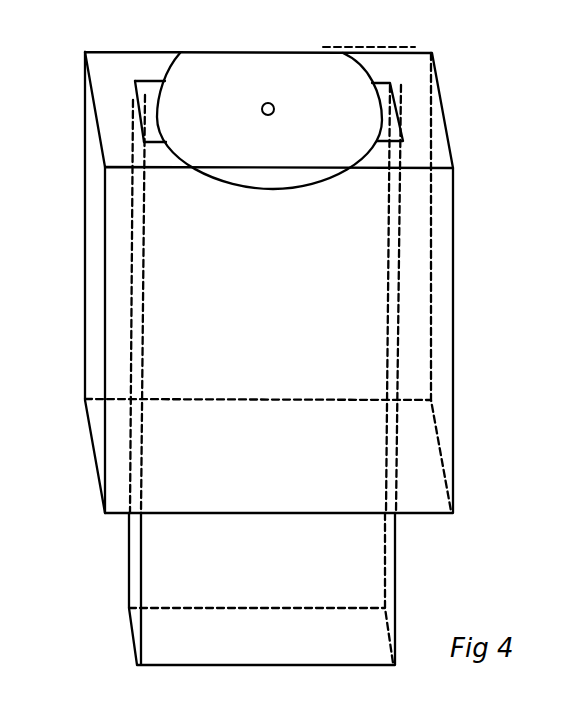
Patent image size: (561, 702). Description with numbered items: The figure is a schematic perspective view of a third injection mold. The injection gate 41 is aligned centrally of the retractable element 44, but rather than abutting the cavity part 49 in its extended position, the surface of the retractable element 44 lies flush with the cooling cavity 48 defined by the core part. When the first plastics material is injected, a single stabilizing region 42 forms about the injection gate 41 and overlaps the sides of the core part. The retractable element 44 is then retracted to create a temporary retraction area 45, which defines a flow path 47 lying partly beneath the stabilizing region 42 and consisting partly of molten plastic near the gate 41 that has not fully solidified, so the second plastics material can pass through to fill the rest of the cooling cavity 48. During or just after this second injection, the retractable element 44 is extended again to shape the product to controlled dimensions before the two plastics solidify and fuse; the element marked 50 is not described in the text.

The injection gate 41 is at (272, 104).
The stabilizing region 42 is at (269, 121).
The retractable element 44 is at (135, 92).
The temporary retraction area 45 is at (137, 101).
The flow path 47 is at (152, 127).
The cooling cavity 48 is at (269, 358).
The cavity part 49 is at (337, 47).
The front wall 50 is at (279, 340).